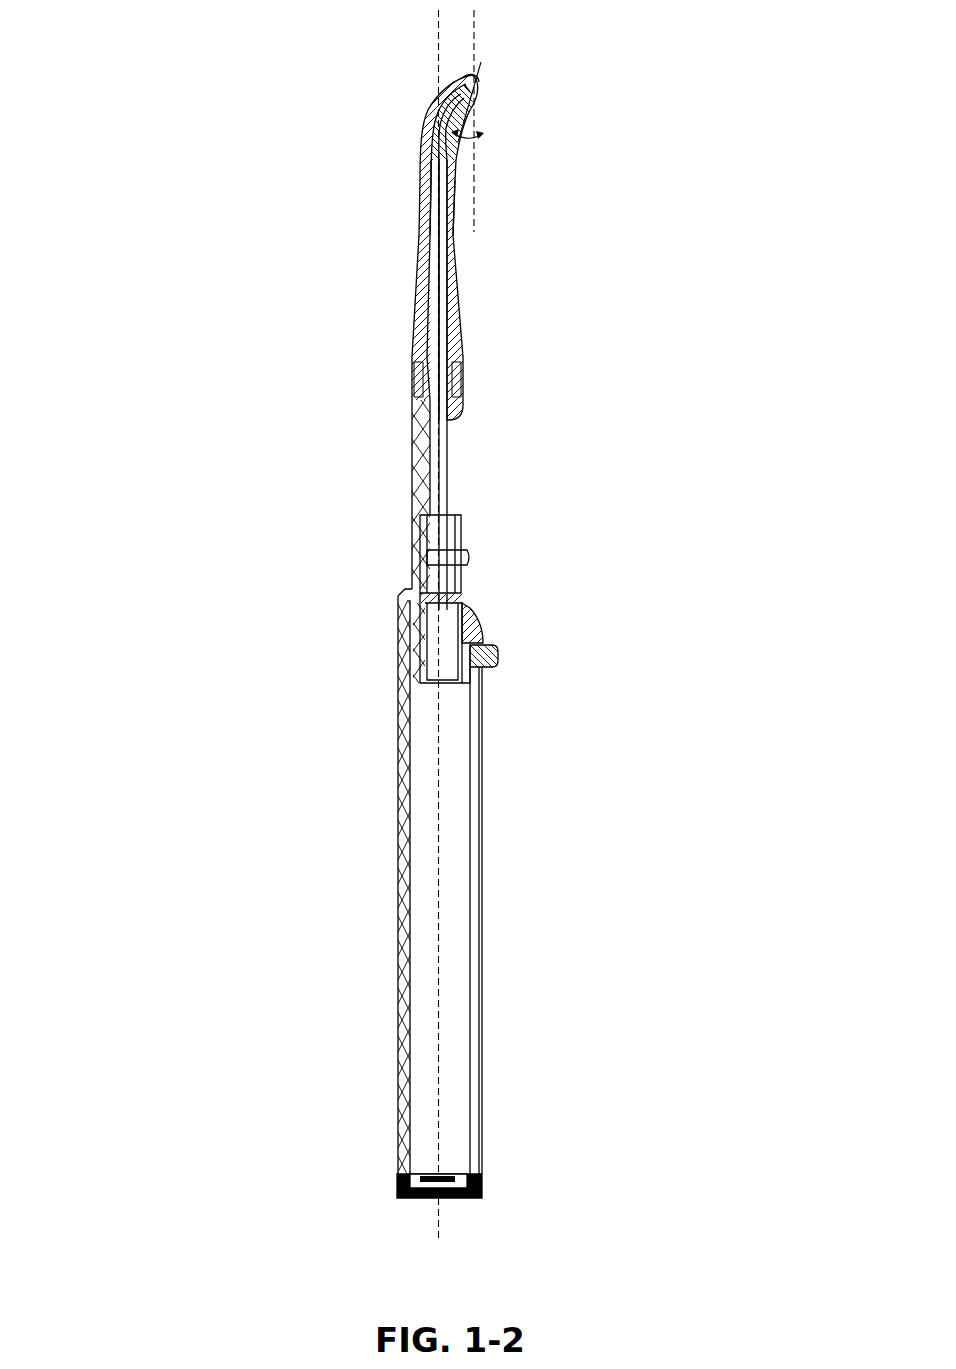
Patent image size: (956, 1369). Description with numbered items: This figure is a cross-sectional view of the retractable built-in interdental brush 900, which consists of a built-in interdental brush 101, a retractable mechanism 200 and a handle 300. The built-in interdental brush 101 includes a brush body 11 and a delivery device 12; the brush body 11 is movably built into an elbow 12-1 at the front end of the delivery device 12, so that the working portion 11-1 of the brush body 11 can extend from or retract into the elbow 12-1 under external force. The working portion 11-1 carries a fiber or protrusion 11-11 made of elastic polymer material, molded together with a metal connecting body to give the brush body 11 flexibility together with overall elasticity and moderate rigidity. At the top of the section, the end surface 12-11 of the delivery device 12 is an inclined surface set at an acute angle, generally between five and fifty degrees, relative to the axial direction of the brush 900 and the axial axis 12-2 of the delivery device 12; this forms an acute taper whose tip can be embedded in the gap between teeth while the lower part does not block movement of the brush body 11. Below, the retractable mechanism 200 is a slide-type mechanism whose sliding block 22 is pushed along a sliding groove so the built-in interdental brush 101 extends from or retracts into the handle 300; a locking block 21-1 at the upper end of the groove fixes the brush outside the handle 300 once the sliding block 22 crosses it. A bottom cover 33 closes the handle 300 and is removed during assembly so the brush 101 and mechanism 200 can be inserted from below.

The retractable built-in interdental brush 900 is at (176, 314).
The delivery device 12 is at (415, 300).
The elbow 12-1 is at (437, 90).
The working portion 11-1 is at (432, 117).
The axial axis of the delivery device 12-2 is at (432, 183).
The end surface 12-11 is at (467, 82).
The fiber or protrusion 11-11 is at (468, 85).
The built-in interdental brush 101 is at (460, 323).
The brush body 11 is at (462, 523).
The retractable mechanism 200 is at (437, 637).
The sliding block 22 is at (482, 643).
The locking block 21-1 is at (482, 665).
The handle 300 is at (479, 978).
The bottom cover 33 is at (480, 1185).